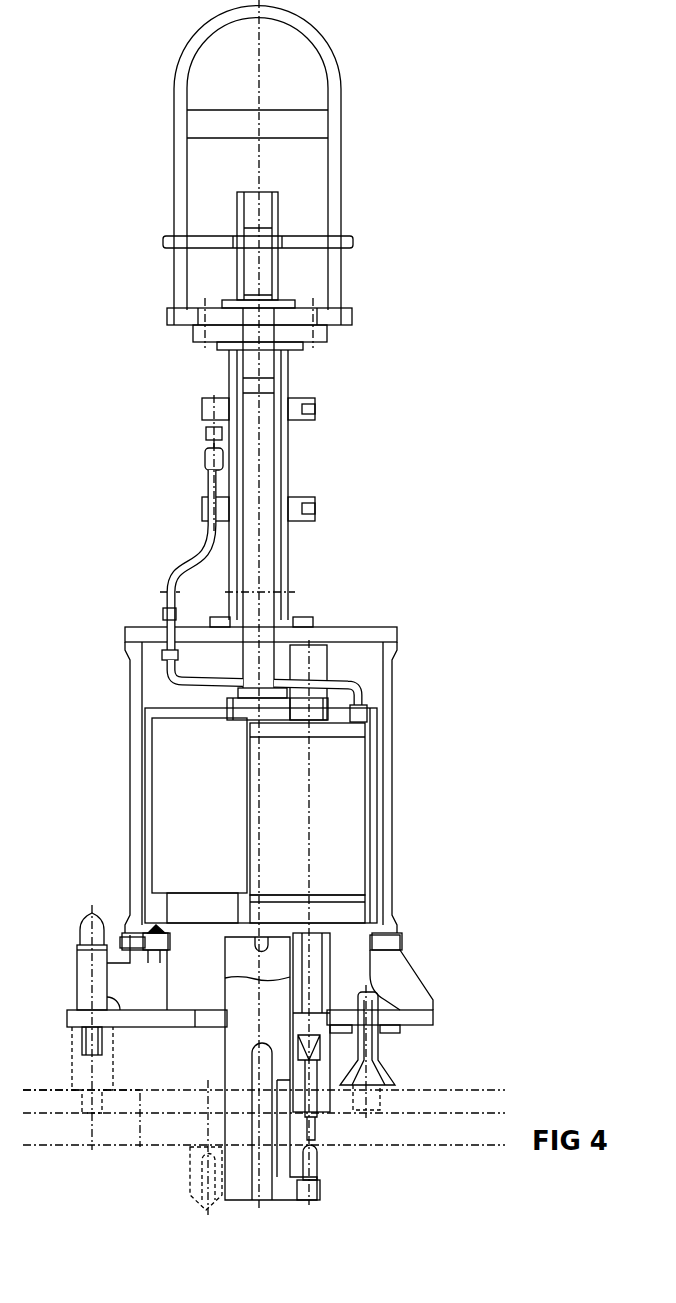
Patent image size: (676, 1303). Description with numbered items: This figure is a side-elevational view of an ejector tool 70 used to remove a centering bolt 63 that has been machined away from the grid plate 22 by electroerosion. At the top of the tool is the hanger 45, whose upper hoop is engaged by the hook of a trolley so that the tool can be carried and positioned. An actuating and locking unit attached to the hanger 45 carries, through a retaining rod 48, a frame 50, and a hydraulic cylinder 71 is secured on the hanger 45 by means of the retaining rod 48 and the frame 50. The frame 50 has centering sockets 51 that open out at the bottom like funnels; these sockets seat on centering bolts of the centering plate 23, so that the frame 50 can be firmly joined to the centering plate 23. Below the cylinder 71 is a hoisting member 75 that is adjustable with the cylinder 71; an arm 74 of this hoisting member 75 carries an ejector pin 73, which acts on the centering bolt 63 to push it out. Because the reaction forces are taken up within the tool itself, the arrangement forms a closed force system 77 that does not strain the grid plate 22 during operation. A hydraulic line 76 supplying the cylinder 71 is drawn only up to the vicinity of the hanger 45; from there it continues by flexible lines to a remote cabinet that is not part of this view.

The hanger 45 is at (333, 167).
The retaining rod 48 is at (288, 458).
The hydraulic line 76 is at (203, 553).
The frame 50 is at (387, 723).
The hydraulic cylinder 71 is at (362, 835).
The ejector tool 70 is at (360, 960).
The closed force system 77 is at (233, 1068).
The centering bolt 63 is at (308, 1093).
The ejector pin 73 is at (314, 1168).
The arm 74 is at (284, 1193).
The centering sockets 51 is at (392, 1068).
The hoisting member 75 is at (237, 1176).
The grid plate 22 is at (458, 1122).
The centering plate 23 is at (40, 1100).